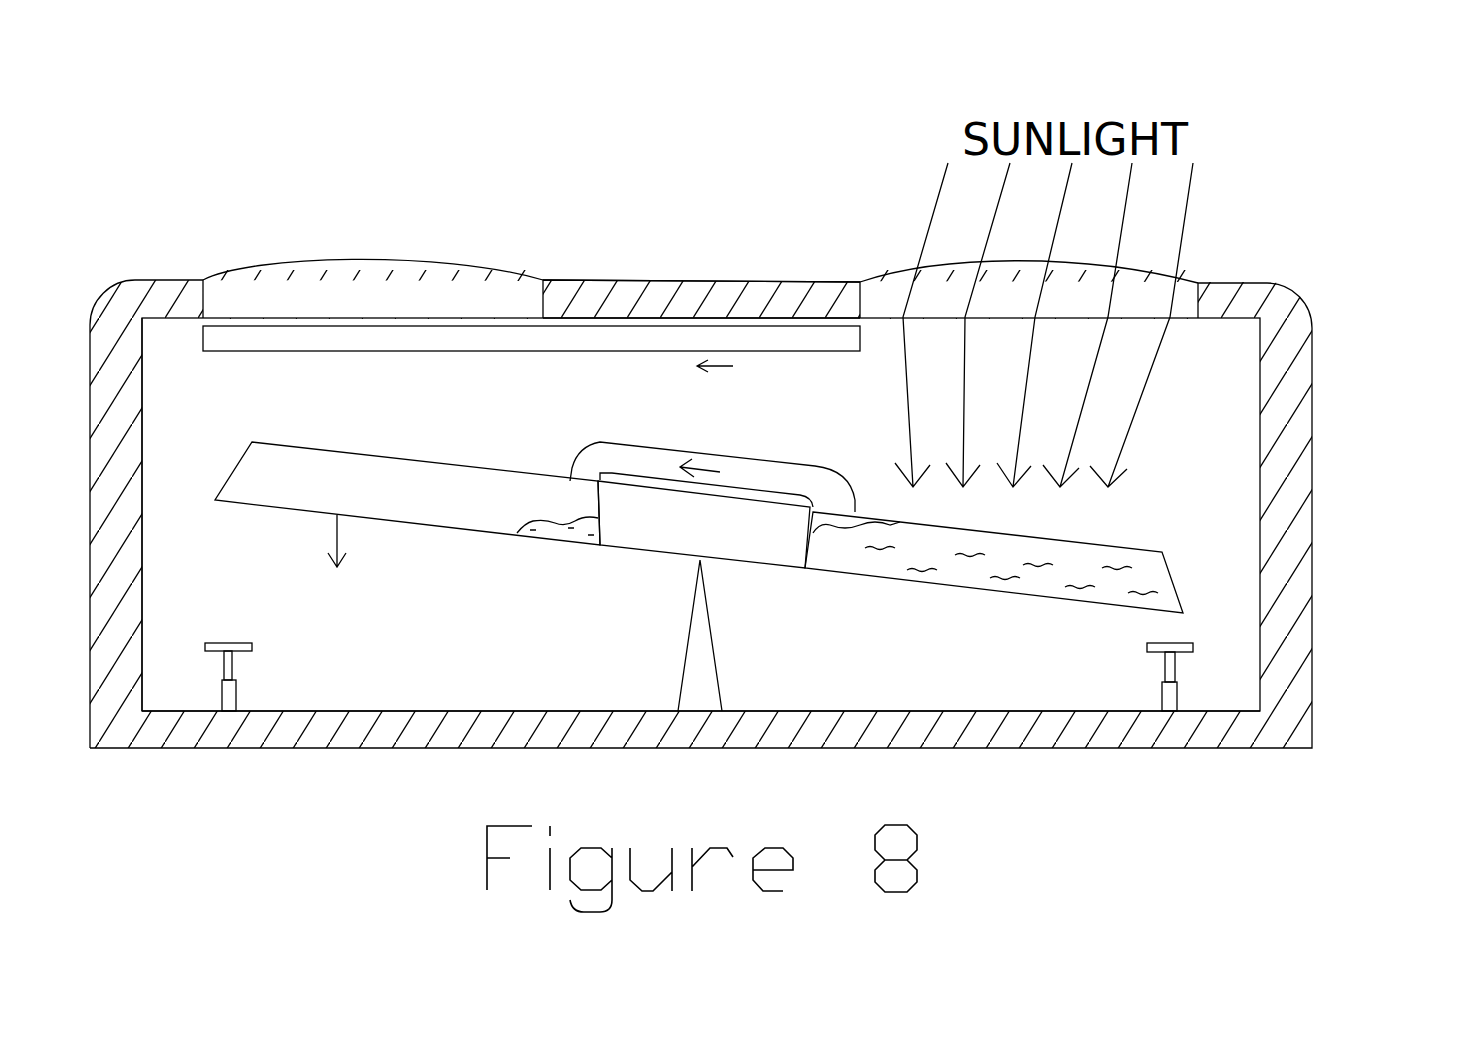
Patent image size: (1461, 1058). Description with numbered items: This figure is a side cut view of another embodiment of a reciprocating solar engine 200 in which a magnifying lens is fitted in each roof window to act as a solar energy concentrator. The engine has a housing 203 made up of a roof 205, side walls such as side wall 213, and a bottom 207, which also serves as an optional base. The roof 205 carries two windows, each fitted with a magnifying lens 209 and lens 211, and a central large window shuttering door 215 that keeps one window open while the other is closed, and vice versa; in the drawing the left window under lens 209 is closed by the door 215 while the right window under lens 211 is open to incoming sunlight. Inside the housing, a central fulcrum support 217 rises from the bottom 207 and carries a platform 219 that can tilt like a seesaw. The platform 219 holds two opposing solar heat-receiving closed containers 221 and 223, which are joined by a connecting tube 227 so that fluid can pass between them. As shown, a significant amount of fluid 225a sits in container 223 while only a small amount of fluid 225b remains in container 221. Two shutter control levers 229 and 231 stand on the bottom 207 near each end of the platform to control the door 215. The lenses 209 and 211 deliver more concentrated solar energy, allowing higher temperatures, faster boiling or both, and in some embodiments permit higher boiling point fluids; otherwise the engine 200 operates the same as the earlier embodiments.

The reciprocating solar engine 200 is at (814, 205).
The housing 203 is at (1312, 520).
The roof 205 is at (700, 282).
The bottom 207 is at (838, 710).
The magnifying lens 209 is at (485, 300).
The magnifying lens 211 is at (890, 290).
The side wall 213 is at (142, 537).
The window shuttering door 215 is at (299, 338).
The central fulcrum support 217 is at (698, 643).
The platform 219 is at (648, 556).
The solar heat-receiving closed container 221 is at (500, 470).
The solar heat-receiving closed container 223 is at (1140, 548).
The fluid 225a is at (983, 577).
The fluid 225b is at (565, 532).
The connecting tube 227 is at (745, 470).
The shutter control lever 229 is at (233, 662).
The shutter control lever 231 is at (1167, 662).